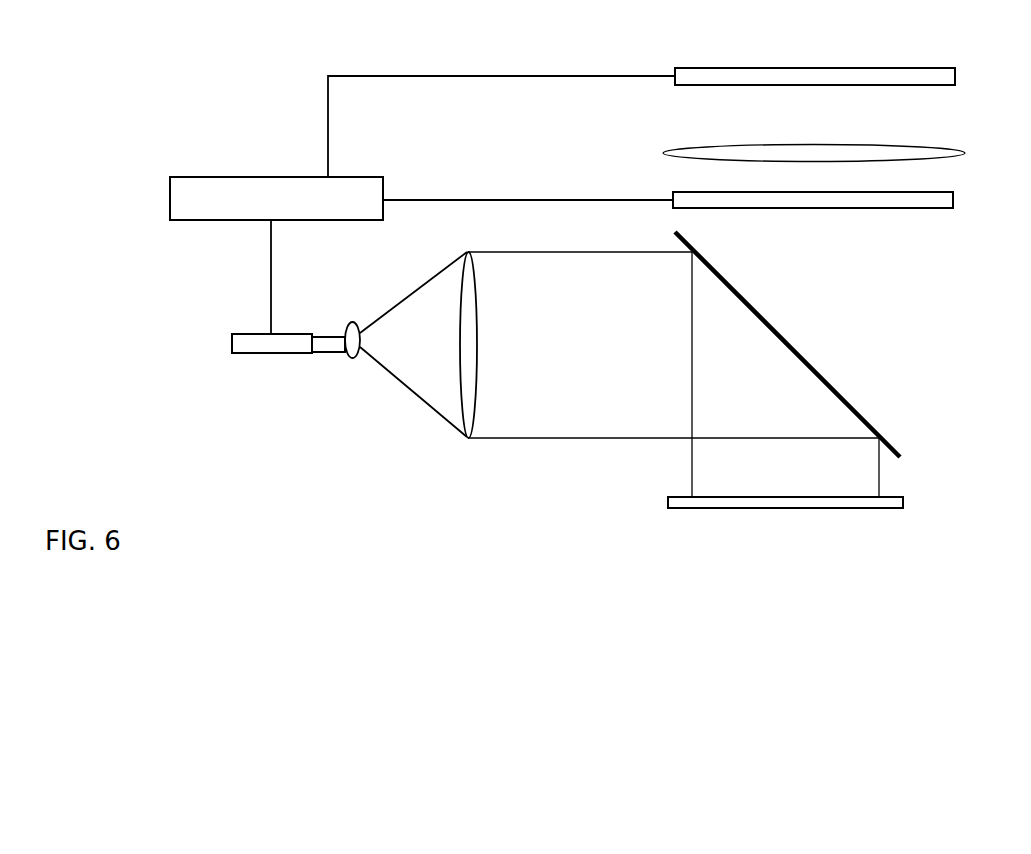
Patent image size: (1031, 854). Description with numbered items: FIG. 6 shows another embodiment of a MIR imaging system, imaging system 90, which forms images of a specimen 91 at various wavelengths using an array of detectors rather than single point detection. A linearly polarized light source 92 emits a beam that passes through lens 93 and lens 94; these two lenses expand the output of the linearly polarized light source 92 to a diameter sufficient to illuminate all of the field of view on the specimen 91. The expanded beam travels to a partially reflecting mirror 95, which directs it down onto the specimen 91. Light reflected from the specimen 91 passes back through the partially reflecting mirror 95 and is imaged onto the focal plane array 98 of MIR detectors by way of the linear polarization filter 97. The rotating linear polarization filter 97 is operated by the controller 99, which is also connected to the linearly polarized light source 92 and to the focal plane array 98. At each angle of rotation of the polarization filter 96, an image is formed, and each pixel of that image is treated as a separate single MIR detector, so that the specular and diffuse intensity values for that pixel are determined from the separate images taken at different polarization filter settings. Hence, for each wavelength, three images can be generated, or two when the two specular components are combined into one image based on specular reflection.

The imaging system 90 is at (226, 65).
The specimen 91 is at (690, 506).
The linearly polarized light source 92 is at (275, 355).
The lens 93 is at (352, 358).
The lens 94 is at (466, 439).
The partially reflecting mirror 95 is at (893, 447).
The polarization filter 96 is at (953, 200).
The linear polarization filter 97 is at (965, 152).
The focal plane array 98 is at (955, 74).
The controller 99 is at (202, 222).